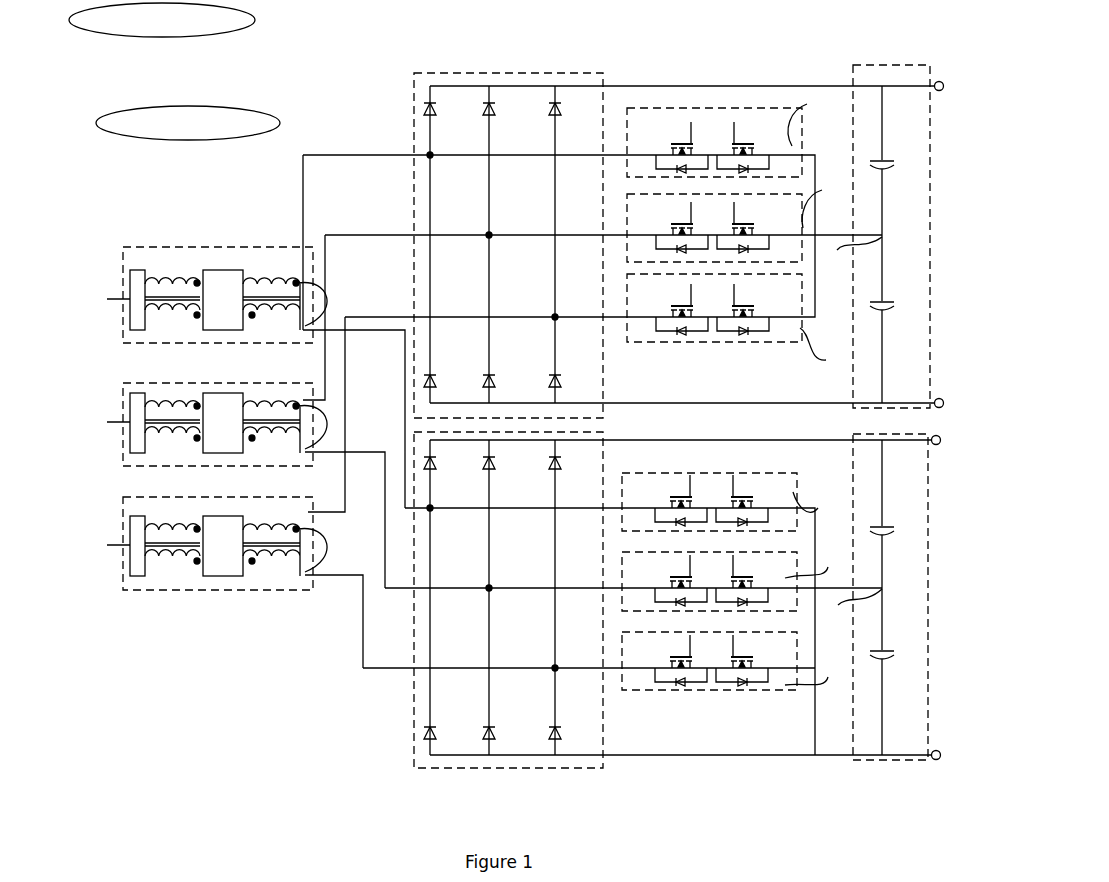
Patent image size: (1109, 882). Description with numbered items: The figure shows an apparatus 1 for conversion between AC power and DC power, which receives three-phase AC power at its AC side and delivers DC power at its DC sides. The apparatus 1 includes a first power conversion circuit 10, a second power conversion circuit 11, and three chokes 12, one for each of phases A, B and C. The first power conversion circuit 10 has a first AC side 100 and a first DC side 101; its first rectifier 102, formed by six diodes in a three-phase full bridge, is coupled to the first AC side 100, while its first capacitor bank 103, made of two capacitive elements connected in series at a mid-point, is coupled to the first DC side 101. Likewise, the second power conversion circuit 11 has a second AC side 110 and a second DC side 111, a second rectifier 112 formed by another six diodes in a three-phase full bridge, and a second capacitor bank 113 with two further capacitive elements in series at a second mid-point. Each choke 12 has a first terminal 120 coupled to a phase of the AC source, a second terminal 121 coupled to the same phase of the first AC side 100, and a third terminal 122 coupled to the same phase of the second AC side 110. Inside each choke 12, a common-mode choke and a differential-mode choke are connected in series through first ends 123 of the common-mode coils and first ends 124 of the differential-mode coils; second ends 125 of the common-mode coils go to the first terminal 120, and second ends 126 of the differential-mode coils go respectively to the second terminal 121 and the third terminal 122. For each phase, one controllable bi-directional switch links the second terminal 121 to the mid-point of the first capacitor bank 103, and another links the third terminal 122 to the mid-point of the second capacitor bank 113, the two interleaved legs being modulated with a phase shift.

The apparatus 1 is at (500, 434).
The first power conversion circuit 10 is at (148, 37).
The second power conversion circuit 11 is at (172, 141).
The choke 12 is at (128, 314).
The first AC side 100 is at (430, 155).
The first DC side 101 is at (938, 80).
The first rectifier 102 is at (415, 76).
The first capacitor bank 103 is at (877, 79).
The second AC side 110 is at (428, 507).
The second DC side 111 is at (932, 438).
The second rectifier 112 is at (419, 768).
The second capacitor bank 113 is at (877, 473).
The first terminal 120 is at (122, 309).
The second terminal 121 is at (303, 232).
The third terminal 122 is at (323, 344).
The first ends of the coils of the first common-mode choke 123 is at (223, 423).
The first ends of the coil of the first differential-mode choke 124 is at (222, 429).
The second ends of the coils of the first common-mode choke 125 is at (150, 300).
The second ends of the coils of the first differential-mode choke 126 is at (296, 282).